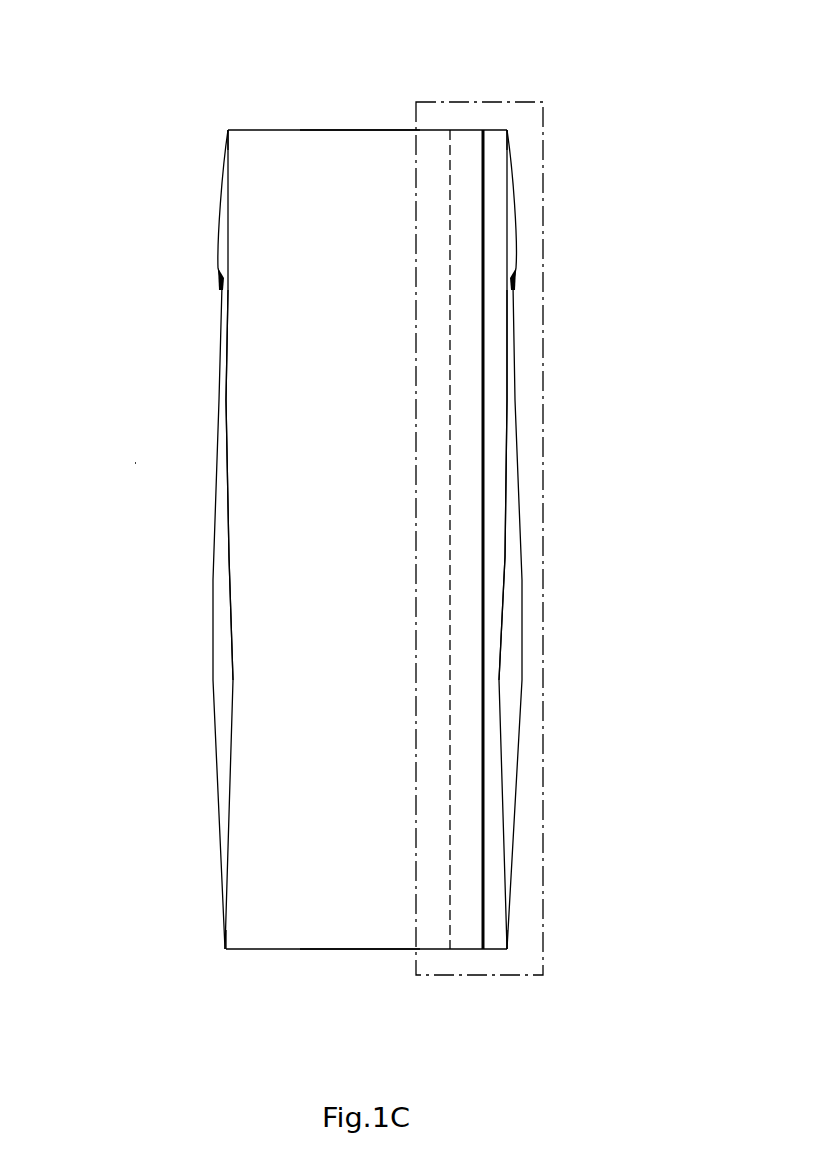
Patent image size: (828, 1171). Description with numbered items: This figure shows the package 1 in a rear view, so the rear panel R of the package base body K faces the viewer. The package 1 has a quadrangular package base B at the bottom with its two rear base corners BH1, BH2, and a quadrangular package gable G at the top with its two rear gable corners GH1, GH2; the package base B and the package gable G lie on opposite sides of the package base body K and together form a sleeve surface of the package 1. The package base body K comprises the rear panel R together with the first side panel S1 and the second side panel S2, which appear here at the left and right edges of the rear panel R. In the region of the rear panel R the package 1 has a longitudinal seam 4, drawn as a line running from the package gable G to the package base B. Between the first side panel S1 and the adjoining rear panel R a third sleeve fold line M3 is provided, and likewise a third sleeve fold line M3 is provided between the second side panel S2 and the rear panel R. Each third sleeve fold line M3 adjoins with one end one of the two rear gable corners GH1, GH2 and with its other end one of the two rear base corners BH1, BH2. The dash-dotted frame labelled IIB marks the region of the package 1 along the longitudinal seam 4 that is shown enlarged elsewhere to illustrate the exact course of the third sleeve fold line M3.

The package 1 is at (626, 99).
The longitudinal seam 4 is at (465, 437).
The rear panel R is at (379, 592).
The package gable G is at (357, 115).
The package base B is at (356, 968).
The package base body K is at (122, 461).
The rear gable corner GH1 is at (507, 130).
The rear gable corner GH2 is at (228, 130).
The rear base corner BH1 is at (507, 951).
The rear base corner BH2 is at (224, 951).
The third sleeve fold line M3 is at (228, 558).
The first side panel S1 is at (512, 630).
The second side panel S2 is at (222, 632).
The section line IIB is at (503, 97).